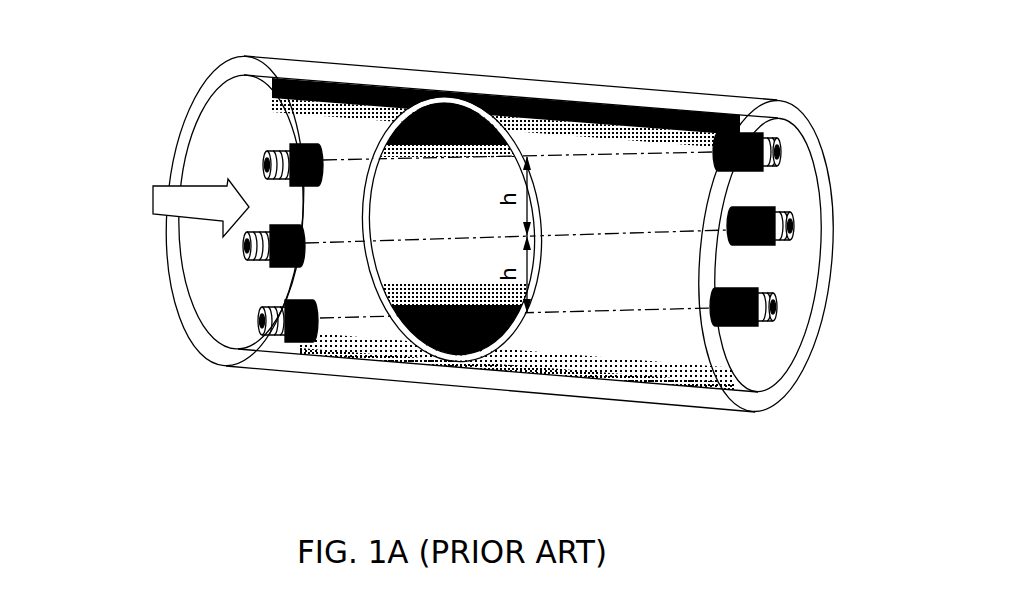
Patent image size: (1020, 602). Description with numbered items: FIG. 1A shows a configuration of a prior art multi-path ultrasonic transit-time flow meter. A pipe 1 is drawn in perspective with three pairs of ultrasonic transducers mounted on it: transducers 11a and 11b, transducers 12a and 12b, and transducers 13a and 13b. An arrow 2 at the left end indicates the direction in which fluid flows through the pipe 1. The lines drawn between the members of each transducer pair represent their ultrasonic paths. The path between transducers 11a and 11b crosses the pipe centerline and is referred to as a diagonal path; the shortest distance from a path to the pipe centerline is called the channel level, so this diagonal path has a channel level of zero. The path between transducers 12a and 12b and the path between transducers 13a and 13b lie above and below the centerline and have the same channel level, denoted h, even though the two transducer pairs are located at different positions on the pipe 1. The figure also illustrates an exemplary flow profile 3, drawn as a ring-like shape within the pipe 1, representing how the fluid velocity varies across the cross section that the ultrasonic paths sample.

The pipe 1 is at (590, 82).
The arrow 2 is at (153, 199).
The flow profile 3 is at (421, 127).
The transducer 11a is at (243, 250).
The transducer 12a is at (292, 146).
The transducer 13a is at (260, 319).
The transducer 11b is at (790, 226).
The transducer 12b is at (773, 137).
The transducer 13b is at (773, 307).